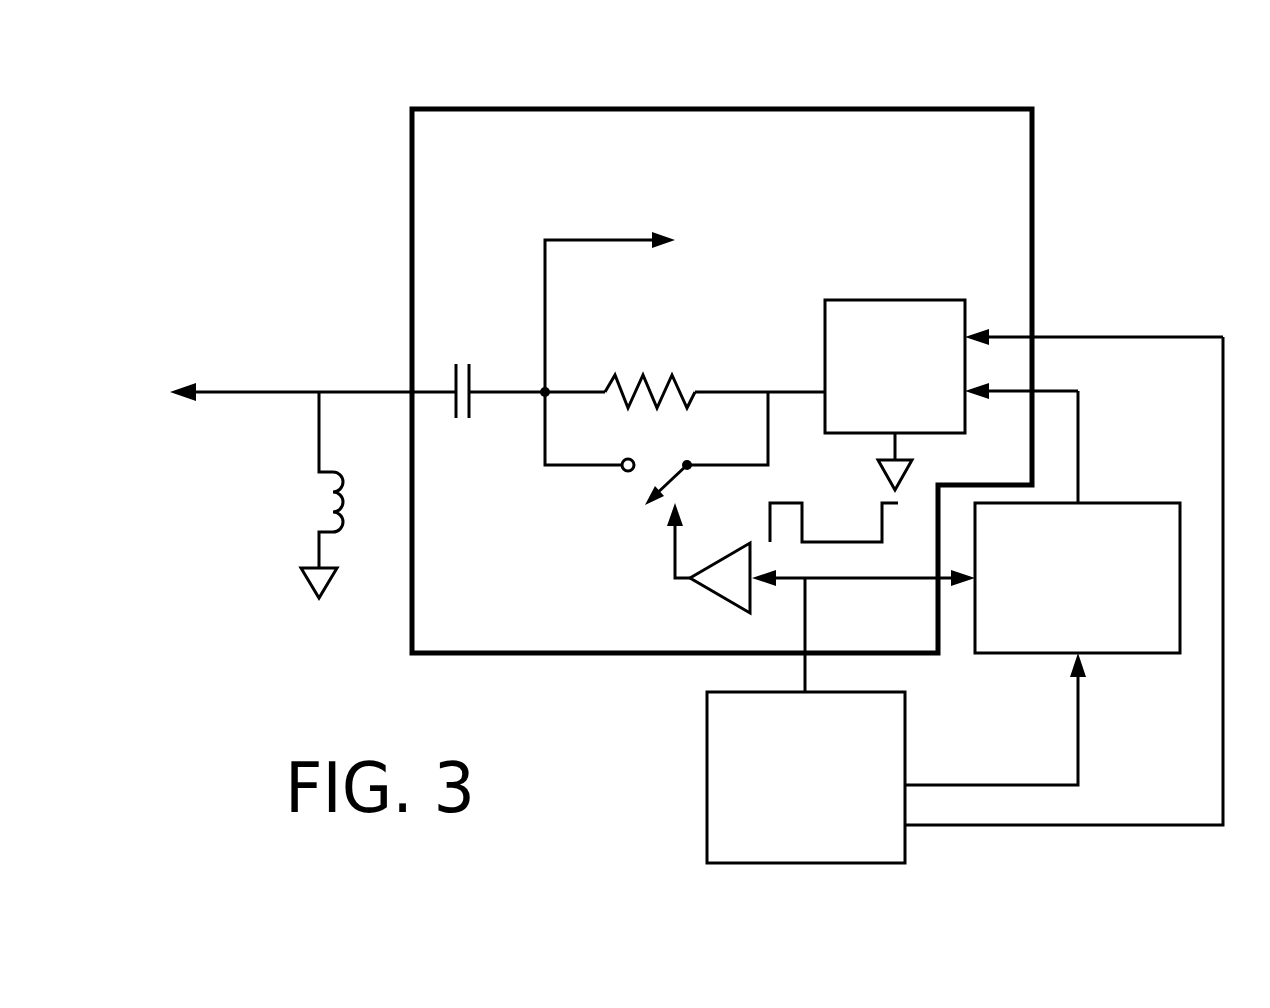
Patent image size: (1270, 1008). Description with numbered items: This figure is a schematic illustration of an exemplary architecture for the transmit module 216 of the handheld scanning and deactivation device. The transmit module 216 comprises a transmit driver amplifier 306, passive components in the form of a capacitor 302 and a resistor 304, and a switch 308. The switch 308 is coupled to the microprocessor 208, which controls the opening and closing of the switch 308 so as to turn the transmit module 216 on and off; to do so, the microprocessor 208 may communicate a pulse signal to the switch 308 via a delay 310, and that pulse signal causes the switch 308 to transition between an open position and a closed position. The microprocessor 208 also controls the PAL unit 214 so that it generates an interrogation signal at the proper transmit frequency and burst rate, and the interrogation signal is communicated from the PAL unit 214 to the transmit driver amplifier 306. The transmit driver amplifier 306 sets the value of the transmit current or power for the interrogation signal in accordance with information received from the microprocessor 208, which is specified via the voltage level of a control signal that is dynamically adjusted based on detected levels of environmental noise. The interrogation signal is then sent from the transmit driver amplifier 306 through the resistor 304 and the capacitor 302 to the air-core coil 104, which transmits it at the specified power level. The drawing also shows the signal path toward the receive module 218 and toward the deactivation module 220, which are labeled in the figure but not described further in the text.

The transmit module 216 is at (440, 100).
The deactivation module 220 is at (231, 372).
The air-core coil 104 is at (355, 514).
The capacitor 302 is at (444, 351).
The resistor 304 is at (632, 349).
The switch 308 is at (642, 456).
The receive module 218 is at (683, 252).
The transmit driver amplifier 306 is at (877, 422).
The delay 310 is at (667, 611).
The PAL unit 214 is at (1060, 606).
The microprocessor 208 is at (787, 804).